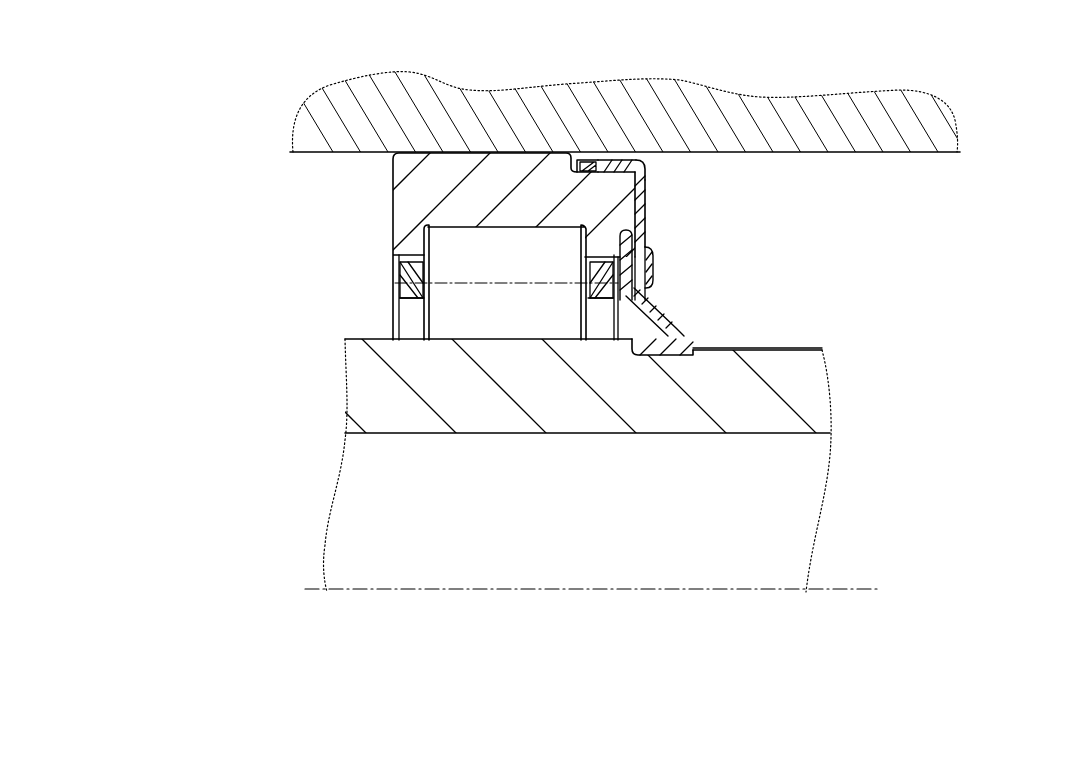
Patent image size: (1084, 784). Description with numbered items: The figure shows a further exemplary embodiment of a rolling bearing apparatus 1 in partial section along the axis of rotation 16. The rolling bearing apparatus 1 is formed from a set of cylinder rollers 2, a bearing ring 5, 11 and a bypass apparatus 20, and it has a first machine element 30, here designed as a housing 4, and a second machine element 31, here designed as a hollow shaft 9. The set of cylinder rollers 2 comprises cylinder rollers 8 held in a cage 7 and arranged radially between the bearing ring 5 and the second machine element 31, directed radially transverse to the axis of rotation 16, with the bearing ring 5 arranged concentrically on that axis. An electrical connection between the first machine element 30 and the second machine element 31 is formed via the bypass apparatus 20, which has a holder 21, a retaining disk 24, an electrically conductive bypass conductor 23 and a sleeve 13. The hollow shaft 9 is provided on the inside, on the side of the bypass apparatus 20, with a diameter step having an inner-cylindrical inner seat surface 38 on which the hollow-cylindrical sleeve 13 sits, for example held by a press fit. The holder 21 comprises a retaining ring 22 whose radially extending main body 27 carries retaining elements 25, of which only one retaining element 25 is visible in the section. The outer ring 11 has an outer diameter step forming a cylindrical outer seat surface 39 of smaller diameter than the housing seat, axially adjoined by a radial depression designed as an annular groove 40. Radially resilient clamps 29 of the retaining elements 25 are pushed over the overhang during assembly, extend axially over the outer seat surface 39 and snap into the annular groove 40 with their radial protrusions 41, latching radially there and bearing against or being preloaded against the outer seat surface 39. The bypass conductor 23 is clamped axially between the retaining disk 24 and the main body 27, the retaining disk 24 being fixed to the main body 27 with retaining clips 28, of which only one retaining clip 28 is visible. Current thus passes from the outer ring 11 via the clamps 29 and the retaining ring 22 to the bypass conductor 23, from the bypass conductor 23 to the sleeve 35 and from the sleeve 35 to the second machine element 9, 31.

The rolling bearing apparatus 1 is at (232, 180).
The set of cylinder rollers 2 is at (306, 212).
The housing 4 is at (613, 94).
The first machine element 30 is at (414, 89).
The bearing ring 5 is at (499, 241).
The outer ring 11 is at (420, 198).
The cage 7 is at (447, 317).
The cylinder rollers 8 is at (400, 296).
The hollow shaft 9 is at (525, 453).
The second machine element 31 is at (362, 397).
The sleeve 13 is at (746, 334).
The sleeve 35 is at (683, 336).
The axis of rotation 16 is at (778, 585).
The bypass apparatus 20 is at (677, 237).
The holder 21 is at (729, 208).
The main body 27 is at (647, 192).
The retaining ring 22 is at (650, 242).
The bypass conductor 23 is at (653, 330).
The retaining disk 24 is at (648, 276).
The retaining element 25 is at (637, 158).
The retaining clip 28 is at (645, 263).
The clamps 29 is at (614, 107).
The radial protrusions 41 is at (640, 161).
The inner seat surface 38 is at (700, 352).
The outer seat surface 39 is at (622, 163).
The annular groove 40 is at (592, 152).